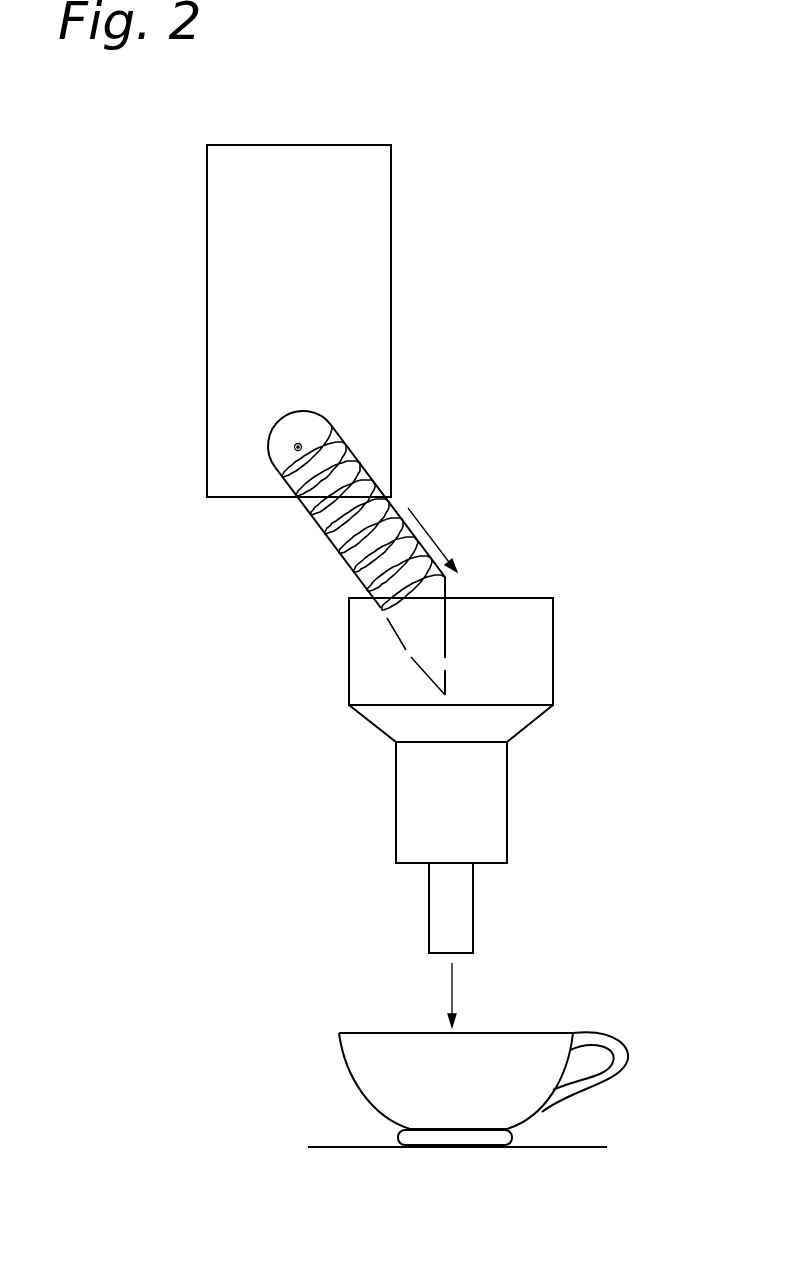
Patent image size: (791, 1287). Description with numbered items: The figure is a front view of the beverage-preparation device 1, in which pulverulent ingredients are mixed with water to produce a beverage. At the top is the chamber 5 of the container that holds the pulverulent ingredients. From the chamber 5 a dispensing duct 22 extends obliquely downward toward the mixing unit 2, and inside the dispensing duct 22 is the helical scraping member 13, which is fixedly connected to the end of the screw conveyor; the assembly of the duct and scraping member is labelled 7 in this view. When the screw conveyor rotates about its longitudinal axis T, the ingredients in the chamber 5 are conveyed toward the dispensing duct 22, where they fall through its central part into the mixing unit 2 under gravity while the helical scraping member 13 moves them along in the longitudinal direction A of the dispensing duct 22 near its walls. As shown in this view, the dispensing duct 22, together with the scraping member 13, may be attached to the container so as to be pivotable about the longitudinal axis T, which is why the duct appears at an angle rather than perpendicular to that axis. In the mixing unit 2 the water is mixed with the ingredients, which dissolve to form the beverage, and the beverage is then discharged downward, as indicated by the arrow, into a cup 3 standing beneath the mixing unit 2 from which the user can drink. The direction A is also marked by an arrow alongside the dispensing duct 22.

The beverage-preparation device 1 is at (537, 368).
The mixing unit 2 is at (347, 671).
The cup 3 is at (410, 1047).
The chamber 5 is at (350, 300).
The capsule with coil 7 is at (304, 522).
The helical scraping member 13 is at (389, 505).
The dispensing duct 22 is at (357, 580).
The longitudinal axis T is at (295, 446).
The longitudinal direction A is at (435, 537).